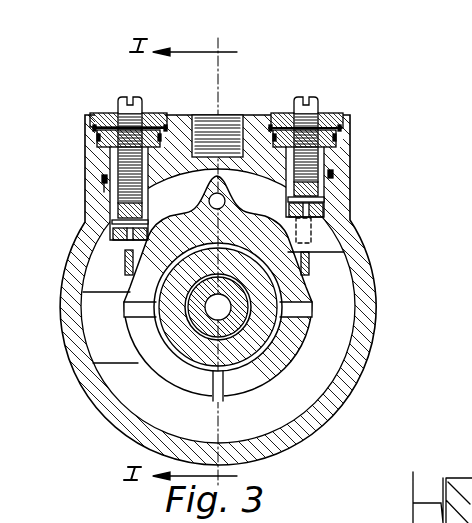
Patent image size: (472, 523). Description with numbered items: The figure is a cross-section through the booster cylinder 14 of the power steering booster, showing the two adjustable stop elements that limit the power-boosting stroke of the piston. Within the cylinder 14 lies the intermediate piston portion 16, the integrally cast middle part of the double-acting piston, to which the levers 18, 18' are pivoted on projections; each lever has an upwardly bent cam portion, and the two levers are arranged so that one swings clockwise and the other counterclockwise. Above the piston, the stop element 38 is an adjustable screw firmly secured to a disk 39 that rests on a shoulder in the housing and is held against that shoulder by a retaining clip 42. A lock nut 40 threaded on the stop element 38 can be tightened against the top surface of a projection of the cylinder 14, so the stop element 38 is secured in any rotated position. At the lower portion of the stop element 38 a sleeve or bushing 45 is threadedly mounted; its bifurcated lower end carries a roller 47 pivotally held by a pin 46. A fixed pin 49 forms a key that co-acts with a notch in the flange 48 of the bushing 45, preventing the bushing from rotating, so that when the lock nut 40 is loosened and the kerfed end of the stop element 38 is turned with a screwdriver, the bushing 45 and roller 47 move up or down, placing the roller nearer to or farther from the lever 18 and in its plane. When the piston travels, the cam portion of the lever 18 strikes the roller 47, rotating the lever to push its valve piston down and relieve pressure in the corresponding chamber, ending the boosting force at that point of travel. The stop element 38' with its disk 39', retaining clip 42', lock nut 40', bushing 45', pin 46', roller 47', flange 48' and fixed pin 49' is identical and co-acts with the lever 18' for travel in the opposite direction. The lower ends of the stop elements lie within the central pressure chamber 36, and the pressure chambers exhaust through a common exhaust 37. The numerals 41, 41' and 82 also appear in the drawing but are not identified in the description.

The booster cylinder 14 is at (364, 330).
The intermediate piston portion 16 is at (285, 345).
The lever 18 is at (119, 326).
The lever 18' is at (315, 284).
The central pressure chamber 36 is at (217, 176).
The common exhaust 37 is at (185, 368).
The stop element 38 is at (97, 104).
The stop element 38' is at (325, 87).
The disk 39 is at (92, 190).
The disk 39' is at (348, 178).
The lock nut 40 is at (136, 94).
The lock nut 40' is at (332, 96).
The block 41 is at (97, 142).
The block 41' is at (342, 138).
The retaining clip 42 is at (101, 124).
The retaining clip 42' is at (339, 122).
The sleeve or bushing 45 is at (81, 218).
The sleeve or bushing 45' is at (350, 200).
The pin 46 is at (84, 237).
The pin 46' is at (348, 218).
The roller 47 is at (110, 270).
The roller 47' is at (355, 244).
The flange 48 is at (163, 143).
The flange 48' is at (293, 123).
The fixed pin 49 is at (74, 193).
The fixed pin 49' is at (366, 178).
The bearing member 82 is at (424, 498).